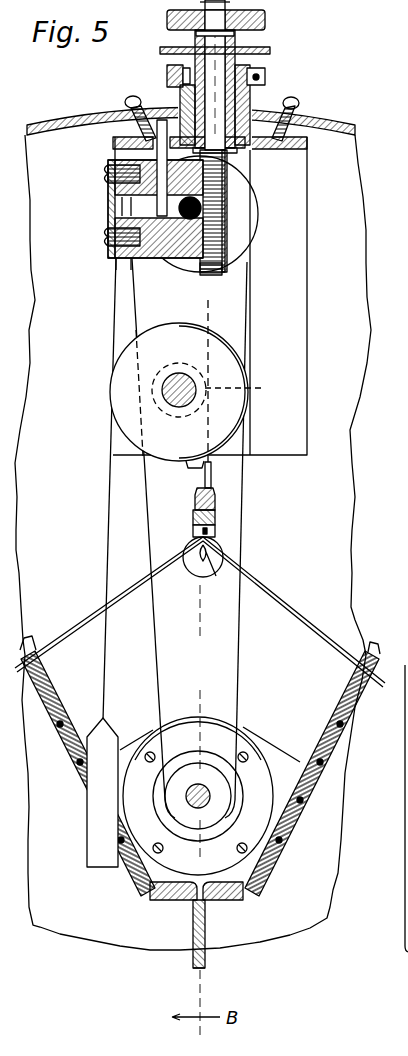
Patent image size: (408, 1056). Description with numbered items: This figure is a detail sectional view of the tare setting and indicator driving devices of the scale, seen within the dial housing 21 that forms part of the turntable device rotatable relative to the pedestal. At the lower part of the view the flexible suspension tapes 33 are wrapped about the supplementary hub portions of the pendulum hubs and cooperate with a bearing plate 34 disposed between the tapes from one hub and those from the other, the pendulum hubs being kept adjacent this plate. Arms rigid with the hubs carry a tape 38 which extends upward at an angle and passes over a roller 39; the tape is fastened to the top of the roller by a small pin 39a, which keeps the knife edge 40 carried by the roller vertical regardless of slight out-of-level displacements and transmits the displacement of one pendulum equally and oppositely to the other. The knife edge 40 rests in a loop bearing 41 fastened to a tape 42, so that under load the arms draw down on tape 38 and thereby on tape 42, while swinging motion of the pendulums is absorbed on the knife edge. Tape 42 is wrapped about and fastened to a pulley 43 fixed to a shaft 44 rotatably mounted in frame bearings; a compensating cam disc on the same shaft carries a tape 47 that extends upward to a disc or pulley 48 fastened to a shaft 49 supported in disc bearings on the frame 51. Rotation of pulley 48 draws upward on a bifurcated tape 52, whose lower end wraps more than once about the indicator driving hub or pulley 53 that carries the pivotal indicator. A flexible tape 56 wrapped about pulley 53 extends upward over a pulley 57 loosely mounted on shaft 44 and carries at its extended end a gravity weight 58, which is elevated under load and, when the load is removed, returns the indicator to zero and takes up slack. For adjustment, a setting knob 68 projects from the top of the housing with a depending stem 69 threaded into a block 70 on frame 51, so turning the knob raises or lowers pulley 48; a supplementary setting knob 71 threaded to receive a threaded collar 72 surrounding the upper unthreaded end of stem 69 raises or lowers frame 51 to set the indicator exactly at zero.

The dial housing 21 is at (90, 120).
The flexible suspension tapes 33 is at (194, 920).
The bearing plate 34 is at (200, 968).
The tape 38 is at (78, 630).
The roller 39 is at (188, 572).
The pin 39a is at (216, 532).
The knife edge 40 is at (218, 573).
The loop bearing 41 is at (216, 516).
The tape 42 is at (211, 470).
The pulley 43 is at (218, 390).
The shaft 44 is at (184, 398).
The tape 47 is at (252, 298).
The disc or pulley 48 is at (238, 210).
The shaft 49 is at (200, 208).
The frame 51 is at (108, 212).
The tape 52 is at (162, 654).
The indicator driving hub or pulley 53 is at (212, 800).
The flexible tape 56 is at (106, 532).
The pulley 57 is at (122, 389).
The gravity weight 58 is at (88, 843).
The setting knob 68 is at (266, 22).
The stem 69 is at (218, 62).
The block 70 is at (140, 160).
The supplementary setting knob 71 is at (167, 72).
The threaded collar 72 is at (182, 90).